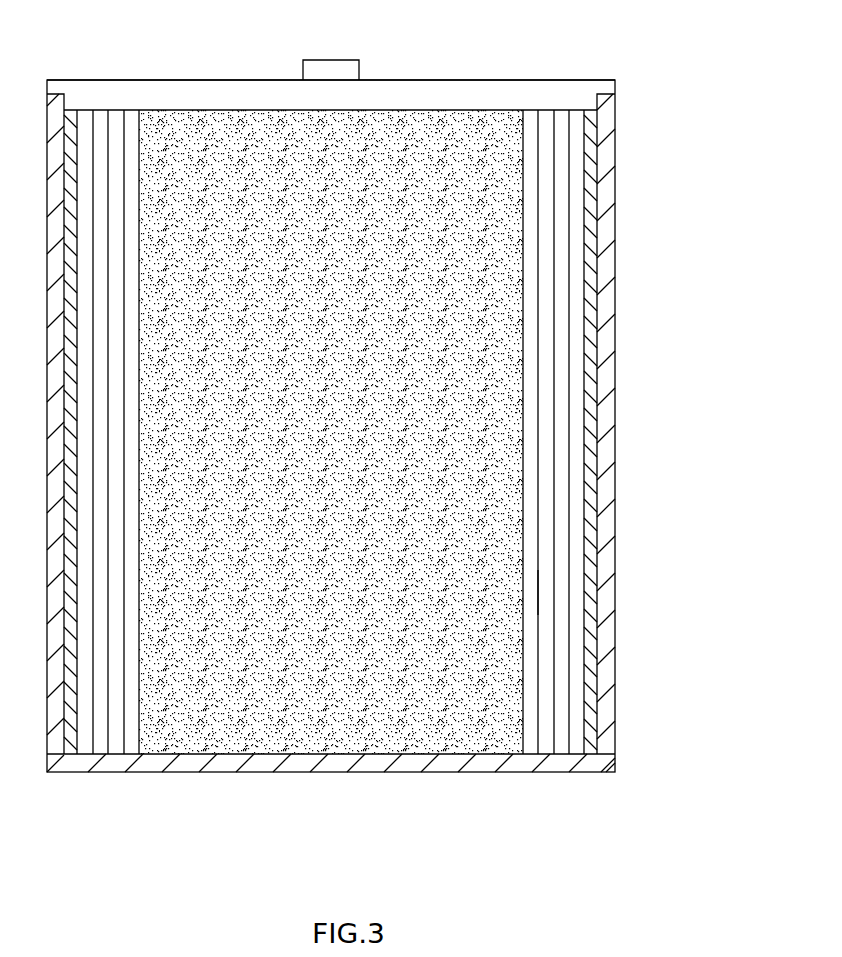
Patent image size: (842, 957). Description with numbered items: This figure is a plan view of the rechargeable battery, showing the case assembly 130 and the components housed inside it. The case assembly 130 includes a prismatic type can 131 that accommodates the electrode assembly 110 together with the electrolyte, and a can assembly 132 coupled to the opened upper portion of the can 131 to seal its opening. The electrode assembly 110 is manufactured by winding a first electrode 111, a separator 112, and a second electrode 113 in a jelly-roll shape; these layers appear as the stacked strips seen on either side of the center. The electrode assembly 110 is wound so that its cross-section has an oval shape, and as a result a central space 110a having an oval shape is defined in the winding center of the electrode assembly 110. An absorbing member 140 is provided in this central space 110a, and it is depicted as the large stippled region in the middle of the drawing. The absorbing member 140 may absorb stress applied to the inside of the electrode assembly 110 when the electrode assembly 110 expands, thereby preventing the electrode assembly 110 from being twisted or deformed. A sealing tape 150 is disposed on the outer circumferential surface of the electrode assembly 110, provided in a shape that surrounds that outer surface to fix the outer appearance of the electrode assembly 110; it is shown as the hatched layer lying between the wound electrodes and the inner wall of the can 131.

The case assembly 130 is at (625, 18).
The can 131 is at (607, 152).
The can assembly 132 is at (580, 90).
The sealing tape 150 is at (593, 238).
The electrode assembly 110 is at (703, 323).
The first electrode 111 is at (543, 327).
The separator 112 is at (560, 370).
The second electrode 113 is at (575, 412).
The central space 110a is at (537, 580).
The absorbing member 140 is at (510, 498).